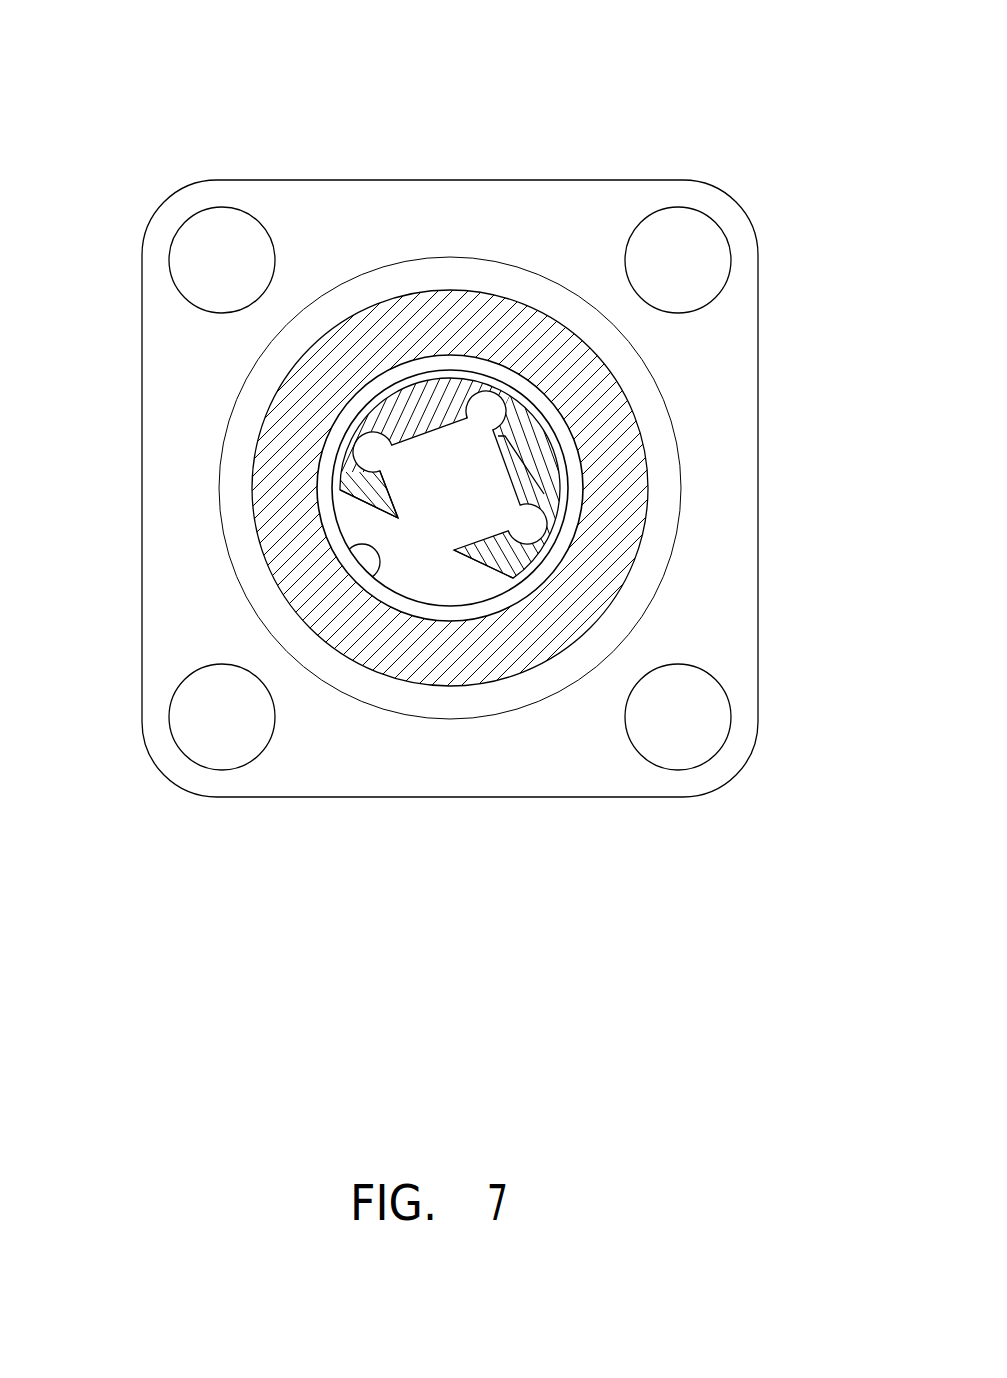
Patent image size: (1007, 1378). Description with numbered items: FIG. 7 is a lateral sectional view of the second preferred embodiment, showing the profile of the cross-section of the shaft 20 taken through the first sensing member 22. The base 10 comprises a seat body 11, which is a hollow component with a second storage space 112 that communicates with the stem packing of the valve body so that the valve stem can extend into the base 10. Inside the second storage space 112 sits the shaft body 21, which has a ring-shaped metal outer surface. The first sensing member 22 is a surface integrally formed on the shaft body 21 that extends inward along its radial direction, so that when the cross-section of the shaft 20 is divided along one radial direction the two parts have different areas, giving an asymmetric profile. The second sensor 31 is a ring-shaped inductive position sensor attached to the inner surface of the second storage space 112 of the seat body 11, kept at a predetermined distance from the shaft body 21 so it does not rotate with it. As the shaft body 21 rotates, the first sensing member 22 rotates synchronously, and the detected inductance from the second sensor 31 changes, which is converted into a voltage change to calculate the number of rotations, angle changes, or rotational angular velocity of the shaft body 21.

The base 10 is at (500, 152).
The seat body 11 is at (613, 437).
The second storage space 112 is at (337, 468).
The shaft 20 is at (470, 563).
The shaft body 21 is at (542, 495).
The first sensing member 22 is at (482, 562).
The second sensor 31 is at (378, 557).